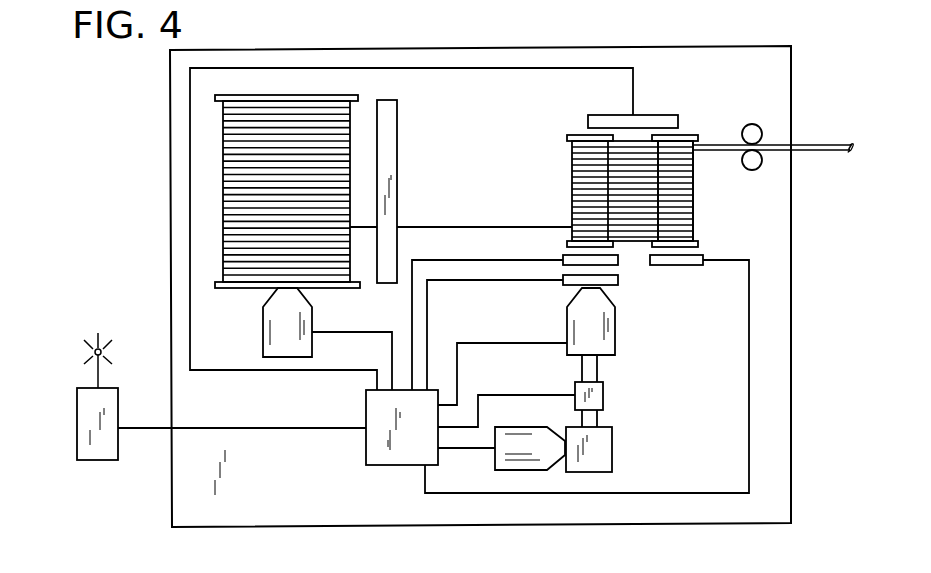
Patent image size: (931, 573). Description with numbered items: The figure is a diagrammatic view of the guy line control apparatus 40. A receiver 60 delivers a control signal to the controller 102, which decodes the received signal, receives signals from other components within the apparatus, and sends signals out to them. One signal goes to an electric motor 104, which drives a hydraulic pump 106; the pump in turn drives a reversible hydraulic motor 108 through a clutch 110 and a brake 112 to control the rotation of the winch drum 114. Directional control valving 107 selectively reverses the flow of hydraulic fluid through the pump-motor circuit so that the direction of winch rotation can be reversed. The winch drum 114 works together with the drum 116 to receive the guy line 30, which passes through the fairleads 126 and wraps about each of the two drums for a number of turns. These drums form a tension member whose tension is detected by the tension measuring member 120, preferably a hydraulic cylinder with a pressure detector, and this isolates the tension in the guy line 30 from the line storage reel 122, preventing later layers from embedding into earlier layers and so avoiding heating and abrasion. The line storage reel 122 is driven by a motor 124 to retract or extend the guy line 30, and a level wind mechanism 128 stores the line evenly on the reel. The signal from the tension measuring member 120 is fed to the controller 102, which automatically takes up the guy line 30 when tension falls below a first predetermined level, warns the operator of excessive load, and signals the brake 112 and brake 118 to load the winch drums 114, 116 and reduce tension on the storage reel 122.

The guy line 30 is at (822, 140).
The guy line control apparatus 40 is at (722, 46).
The receiver 60 is at (77, 410).
The controller 102 is at (366, 445).
The electric motor 104 is at (520, 471).
The hydraulic pump 106 is at (612, 445).
The directional control valving 107 is at (603, 395).
The reversible hydraulic motor 108 is at (615, 342).
The clutch 110 is at (618, 281).
The brake 112 is at (618, 261).
The winch drum 114 is at (572, 138).
The drum 116 is at (691, 135).
The brake 118 is at (685, 266).
The tension measuring member 120 is at (652, 113).
The line storage reel 122 is at (232, 96).
The motor 124 is at (263, 338).
The fairleads 126 is at (753, 122).
The level wind mechanism 128 is at (396, 186).